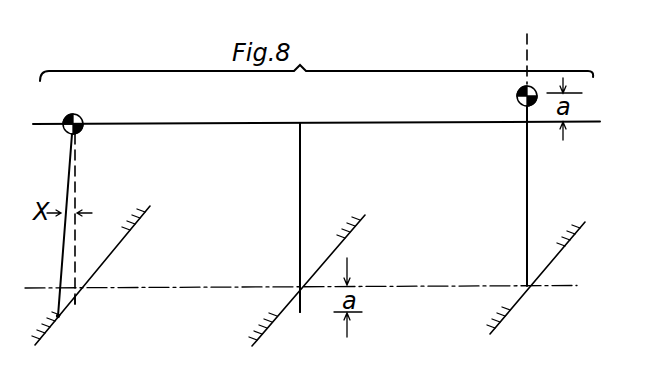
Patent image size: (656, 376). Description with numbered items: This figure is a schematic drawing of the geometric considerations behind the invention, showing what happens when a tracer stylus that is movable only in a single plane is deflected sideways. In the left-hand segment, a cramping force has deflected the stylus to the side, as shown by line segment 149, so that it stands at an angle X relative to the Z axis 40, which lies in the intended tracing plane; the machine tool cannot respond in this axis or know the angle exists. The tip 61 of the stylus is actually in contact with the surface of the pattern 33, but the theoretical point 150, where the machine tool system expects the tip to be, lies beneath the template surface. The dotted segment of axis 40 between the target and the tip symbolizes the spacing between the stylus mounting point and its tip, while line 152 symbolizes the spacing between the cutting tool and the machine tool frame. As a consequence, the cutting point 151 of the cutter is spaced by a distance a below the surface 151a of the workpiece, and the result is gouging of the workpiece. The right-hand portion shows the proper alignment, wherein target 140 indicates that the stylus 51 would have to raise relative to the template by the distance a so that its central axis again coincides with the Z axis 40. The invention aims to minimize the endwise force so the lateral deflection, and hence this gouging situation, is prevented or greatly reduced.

The axis 40 is at (77, 190).
The pattern 33 is at (128, 220).
The stylus 51 is at (526, 176).
The tip 61 is at (56, 314).
The target 140 is at (515, 97).
The line segment 149 is at (63, 258).
The theoretical point 150 is at (77, 313).
The cutting point 151 is at (301, 313).
The surface of the workpiece 151a is at (343, 233).
The line 152 is at (302, 177).